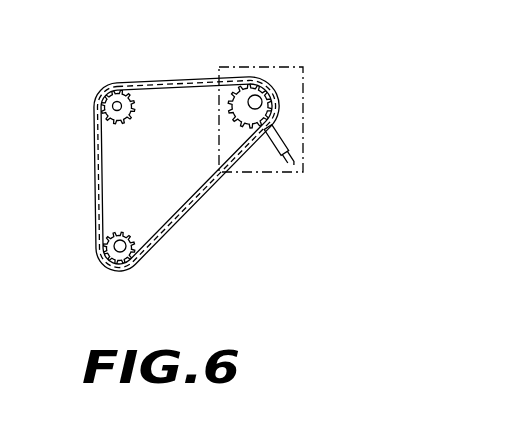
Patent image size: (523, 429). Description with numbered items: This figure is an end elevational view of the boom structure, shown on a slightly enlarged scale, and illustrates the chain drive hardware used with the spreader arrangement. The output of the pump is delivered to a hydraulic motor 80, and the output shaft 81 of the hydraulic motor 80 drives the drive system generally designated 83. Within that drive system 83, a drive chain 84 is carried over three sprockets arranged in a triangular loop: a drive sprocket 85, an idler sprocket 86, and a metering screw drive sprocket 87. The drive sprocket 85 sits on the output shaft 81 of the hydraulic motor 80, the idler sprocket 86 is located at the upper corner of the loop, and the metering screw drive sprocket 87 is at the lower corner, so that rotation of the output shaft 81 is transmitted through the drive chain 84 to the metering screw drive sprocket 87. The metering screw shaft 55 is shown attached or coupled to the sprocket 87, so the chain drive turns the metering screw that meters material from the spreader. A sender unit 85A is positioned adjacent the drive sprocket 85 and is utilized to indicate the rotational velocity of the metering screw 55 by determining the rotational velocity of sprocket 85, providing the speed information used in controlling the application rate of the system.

The metering screw shaft 55 is at (118, 246).
The hydraulic motor 80 is at (304, 107).
The output shaft 81 is at (254, 96).
The drive system 83 is at (214, 196).
The drive chain 84 is at (177, 82).
The drive sprocket 85 is at (272, 84).
The sender unit 85A is at (287, 140).
The idler sprocket 86 is at (108, 88).
The metering screw drive sprocket 87 is at (112, 262).